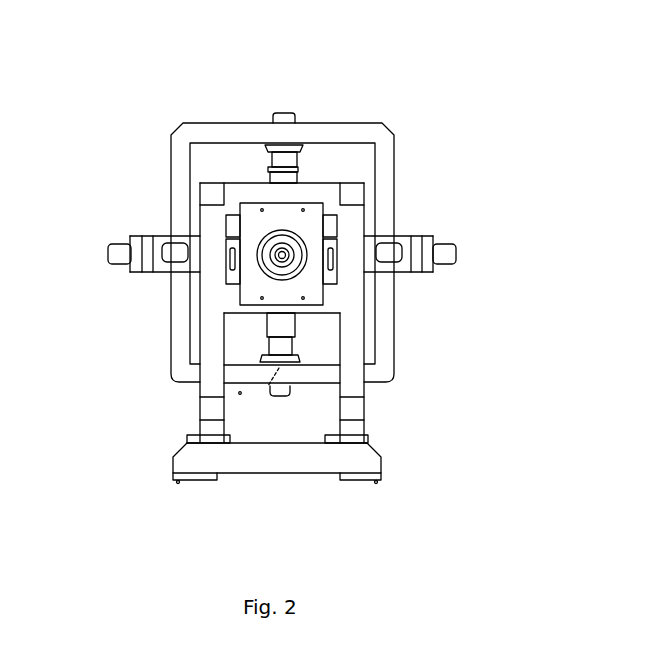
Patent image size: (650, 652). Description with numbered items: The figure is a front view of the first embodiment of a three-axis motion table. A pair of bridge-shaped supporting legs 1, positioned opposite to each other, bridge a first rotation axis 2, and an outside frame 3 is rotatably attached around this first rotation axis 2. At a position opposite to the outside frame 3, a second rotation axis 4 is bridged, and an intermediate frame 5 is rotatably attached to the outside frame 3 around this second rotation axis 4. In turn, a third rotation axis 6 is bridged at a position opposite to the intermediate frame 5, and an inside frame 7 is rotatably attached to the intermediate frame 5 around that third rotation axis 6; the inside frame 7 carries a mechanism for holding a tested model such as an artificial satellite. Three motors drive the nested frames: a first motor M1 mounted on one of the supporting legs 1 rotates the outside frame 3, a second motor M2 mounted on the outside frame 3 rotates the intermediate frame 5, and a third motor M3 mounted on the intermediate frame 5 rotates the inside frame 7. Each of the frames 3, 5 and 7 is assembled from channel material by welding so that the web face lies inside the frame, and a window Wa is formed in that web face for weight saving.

The supporting leg 1 is at (353, 377).
The first rotation axis 2 is at (290, 260).
The outside frame 3 is at (393, 253).
The second rotation axis 4 is at (118, 245).
The intermediate frame 5 is at (350, 140).
The third rotation axis 6 is at (288, 112).
The inside frame 7 is at (267, 177).
The window Wa is at (177, 250).
The first motor M1 is at (270, 262).
The second motor M2 is at (427, 277).
The third motor M3 is at (267, 383).